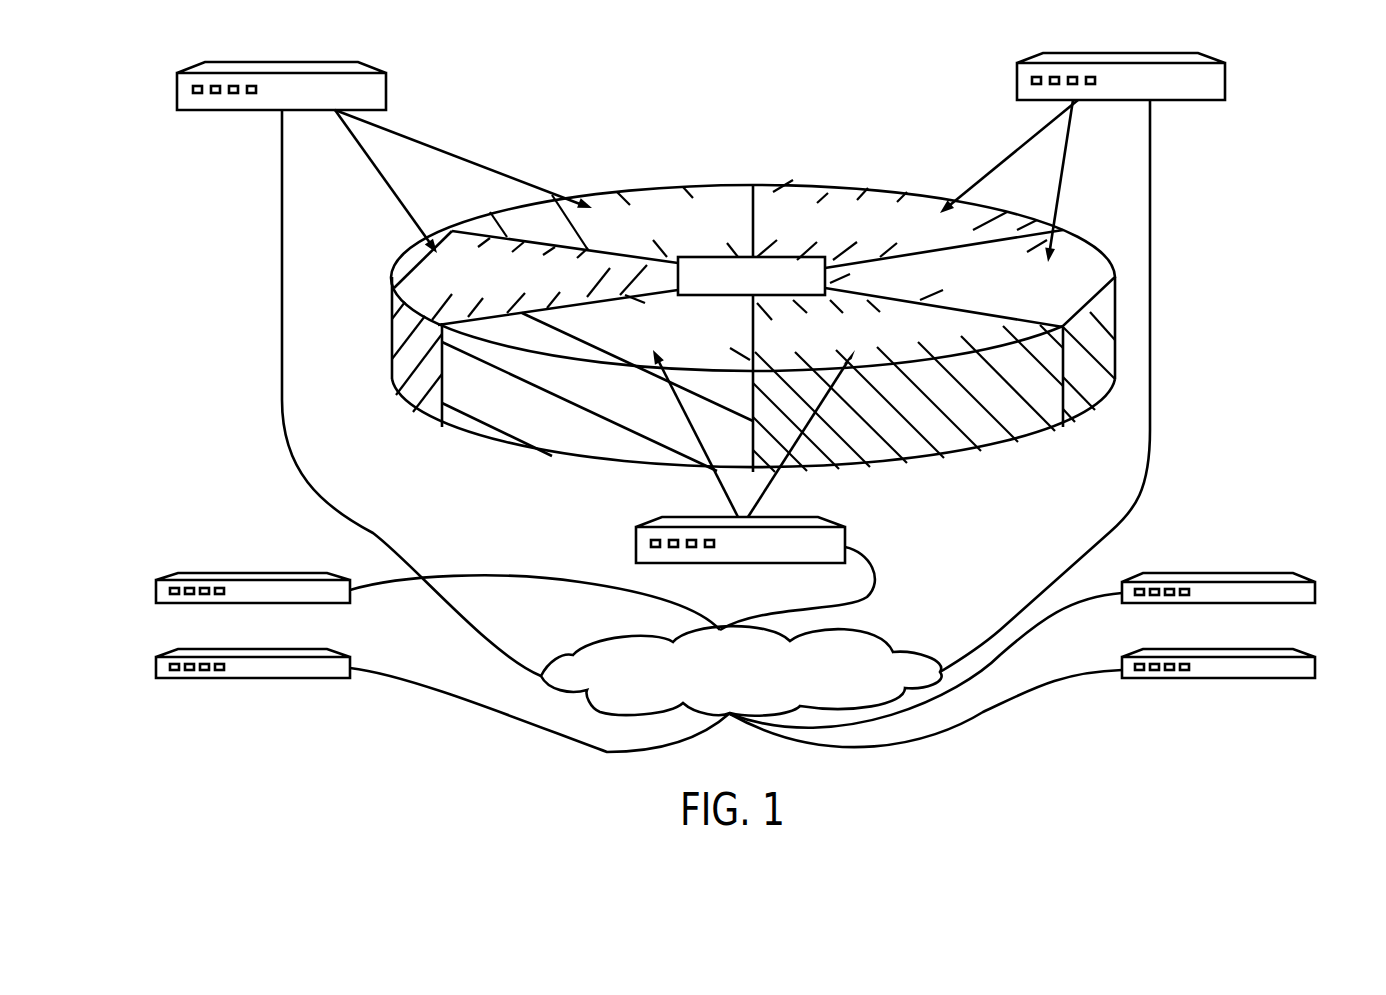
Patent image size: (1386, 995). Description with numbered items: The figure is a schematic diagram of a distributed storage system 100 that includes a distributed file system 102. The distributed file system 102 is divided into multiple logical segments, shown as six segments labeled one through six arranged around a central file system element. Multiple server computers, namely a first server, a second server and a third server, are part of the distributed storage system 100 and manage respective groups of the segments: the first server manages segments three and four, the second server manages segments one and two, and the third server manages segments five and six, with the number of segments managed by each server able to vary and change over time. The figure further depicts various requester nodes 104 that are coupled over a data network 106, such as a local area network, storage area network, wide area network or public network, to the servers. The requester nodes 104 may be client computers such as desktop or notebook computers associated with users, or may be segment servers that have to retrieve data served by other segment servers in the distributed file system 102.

The distributed storage system 100 is at (612, 95).
The distributed file system 102 is at (745, 257).
The requester nodes 104 is at (175, 605).
The data network 106 is at (880, 636).